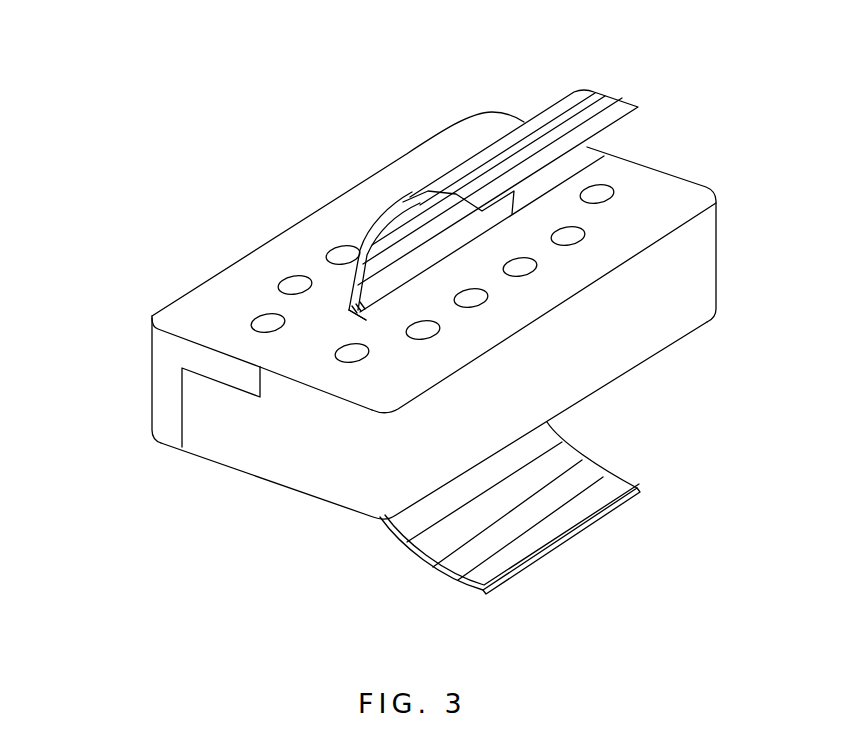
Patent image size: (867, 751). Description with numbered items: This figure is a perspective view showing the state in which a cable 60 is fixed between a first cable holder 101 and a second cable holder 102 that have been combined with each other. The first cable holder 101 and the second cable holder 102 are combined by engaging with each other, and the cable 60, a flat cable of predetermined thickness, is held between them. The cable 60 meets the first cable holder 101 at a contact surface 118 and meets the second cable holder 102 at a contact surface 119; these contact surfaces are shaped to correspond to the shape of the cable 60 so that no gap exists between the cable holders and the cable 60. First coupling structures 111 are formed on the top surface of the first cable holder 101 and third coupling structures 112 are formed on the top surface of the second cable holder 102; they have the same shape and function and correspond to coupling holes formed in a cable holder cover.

The cable 60 is at (506, 225).
The first cable holder 101 is at (153, 376).
The second cable holder 102 is at (296, 465).
The first coupling structures 111 is at (293, 283).
The third coupling structures 112 is at (532, 266).
The contact surface 118 is at (342, 297).
The contact surface 119 is at (367, 315).